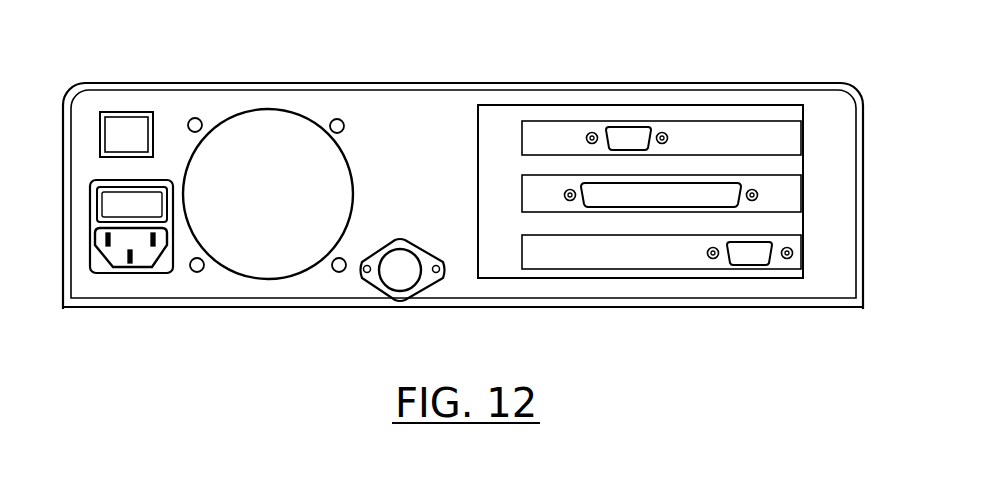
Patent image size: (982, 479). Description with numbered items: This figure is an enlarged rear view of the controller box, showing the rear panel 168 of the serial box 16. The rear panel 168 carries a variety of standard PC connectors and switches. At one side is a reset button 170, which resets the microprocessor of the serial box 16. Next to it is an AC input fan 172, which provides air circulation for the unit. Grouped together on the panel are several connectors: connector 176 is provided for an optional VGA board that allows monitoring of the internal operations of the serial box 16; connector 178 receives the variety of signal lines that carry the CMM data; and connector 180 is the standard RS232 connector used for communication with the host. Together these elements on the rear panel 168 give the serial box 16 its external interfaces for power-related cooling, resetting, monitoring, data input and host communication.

The serial box 16 is at (560, 66).
The rear panel 168 is at (450, 102).
The reset button 170 is at (123, 123).
The AC input fan 172 is at (272, 127).
The connector 176 is at (650, 100).
The connector 178 is at (722, 185).
The connector 180 is at (753, 267).